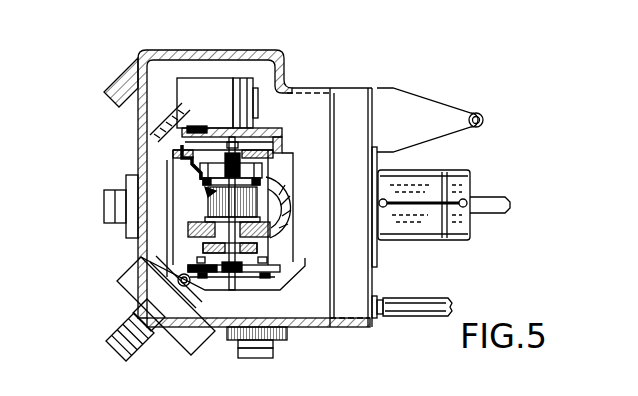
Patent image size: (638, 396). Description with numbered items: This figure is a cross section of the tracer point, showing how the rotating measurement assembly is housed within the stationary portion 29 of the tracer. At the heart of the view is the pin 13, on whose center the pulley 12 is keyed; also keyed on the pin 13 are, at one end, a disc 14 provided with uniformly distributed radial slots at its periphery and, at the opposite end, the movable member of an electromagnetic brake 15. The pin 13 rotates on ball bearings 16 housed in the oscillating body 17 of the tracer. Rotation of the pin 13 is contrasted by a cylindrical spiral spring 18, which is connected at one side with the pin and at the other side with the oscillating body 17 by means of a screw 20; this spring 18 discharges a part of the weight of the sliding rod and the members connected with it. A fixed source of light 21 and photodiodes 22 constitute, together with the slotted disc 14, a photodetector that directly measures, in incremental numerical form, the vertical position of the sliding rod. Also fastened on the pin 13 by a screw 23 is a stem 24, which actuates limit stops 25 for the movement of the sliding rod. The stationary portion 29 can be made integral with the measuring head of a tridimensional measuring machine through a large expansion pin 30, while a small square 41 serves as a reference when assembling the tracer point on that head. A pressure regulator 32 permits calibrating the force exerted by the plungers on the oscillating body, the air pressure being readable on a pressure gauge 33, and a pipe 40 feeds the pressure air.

The pulley 12 is at (252, 203).
The pin 13 is at (258, 172).
The disc 14 is at (270, 139).
The electromagnetic brake 15 is at (213, 248).
The ball bearings 16 is at (200, 230).
The oscillating body 17 is at (277, 232).
The cylindrical spiral spring 18 is at (262, 189).
The screw 20 is at (207, 187).
The fixed source of light 21 is at (187, 128).
The photodiodes 22 is at (200, 168).
The screw 23 is at (238, 273).
The stem 24 is at (177, 280).
The limit stops 25 is at (297, 255).
The stationary portion 29 is at (284, 62).
The expansion pin 30 is at (470, 229).
The pressure regulator 32 is at (113, 330).
The pressure gauge 33 is at (130, 78).
The pipe 40 is at (437, 306).
The small square 41 is at (434, 107).